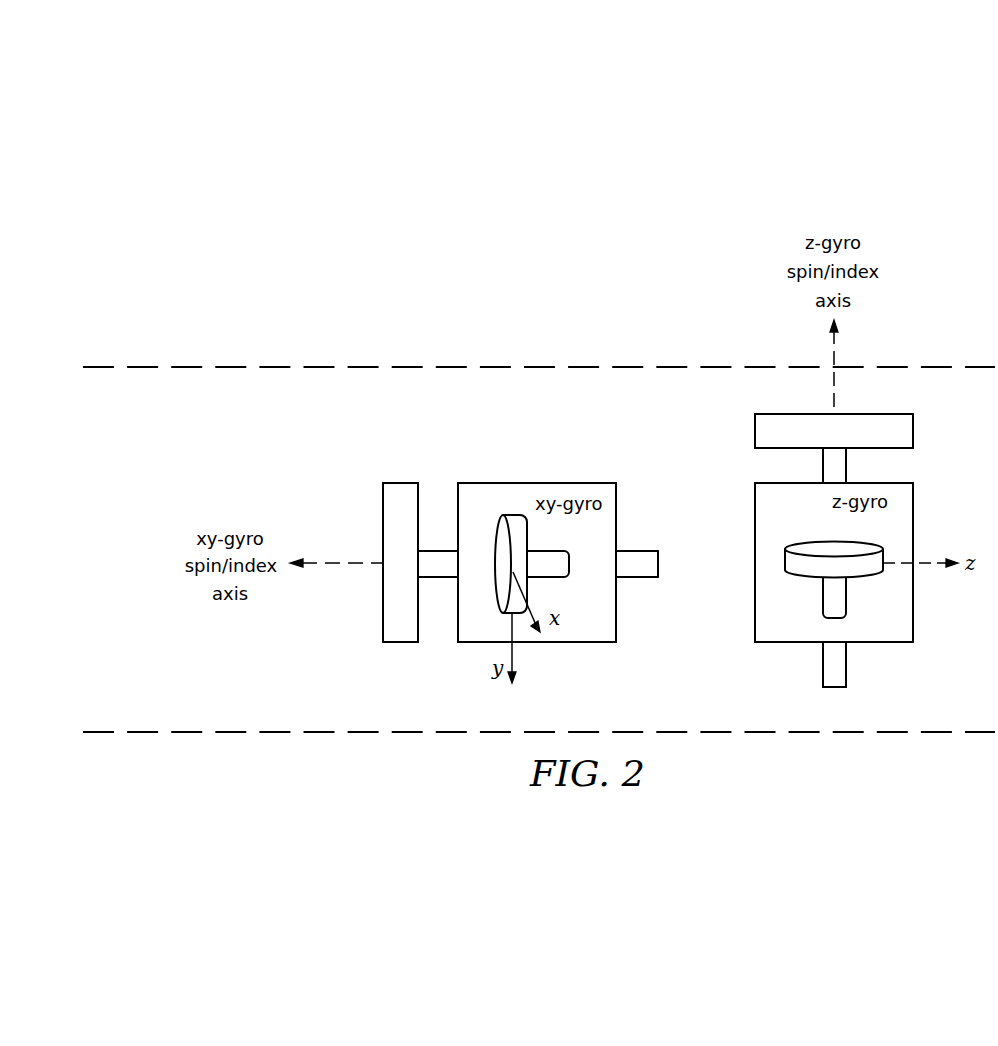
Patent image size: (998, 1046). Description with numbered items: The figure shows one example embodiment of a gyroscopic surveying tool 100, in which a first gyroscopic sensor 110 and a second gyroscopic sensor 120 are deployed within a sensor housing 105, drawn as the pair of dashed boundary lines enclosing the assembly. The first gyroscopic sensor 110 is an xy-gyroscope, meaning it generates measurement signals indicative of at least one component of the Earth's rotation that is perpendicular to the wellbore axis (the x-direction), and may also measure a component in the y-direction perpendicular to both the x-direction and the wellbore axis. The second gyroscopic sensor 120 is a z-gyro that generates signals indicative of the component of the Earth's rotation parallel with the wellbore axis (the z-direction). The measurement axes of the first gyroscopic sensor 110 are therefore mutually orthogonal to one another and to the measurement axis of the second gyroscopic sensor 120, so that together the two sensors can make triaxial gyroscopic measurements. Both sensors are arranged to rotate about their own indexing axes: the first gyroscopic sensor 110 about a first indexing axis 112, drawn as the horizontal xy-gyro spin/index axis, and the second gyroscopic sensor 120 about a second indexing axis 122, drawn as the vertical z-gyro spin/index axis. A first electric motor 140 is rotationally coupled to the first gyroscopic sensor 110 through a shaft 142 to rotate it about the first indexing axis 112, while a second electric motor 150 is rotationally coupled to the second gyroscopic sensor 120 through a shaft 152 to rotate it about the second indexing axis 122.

The gyroscopic surveying tool 100 is at (488, 248).
The sensor housing 105 is at (365, 365).
The first gyroscopic sensor 110 is at (510, 515).
The first indexing axis 112 is at (338, 560).
The second gyroscopic sensor 120 is at (785, 560).
The second indexing axis 122 is at (834, 380).
The first electric motor 140 is at (402, 482).
The shaft 142 is at (442, 548).
The second electric motor 150 is at (913, 431).
The shaft 152 is at (846, 460).